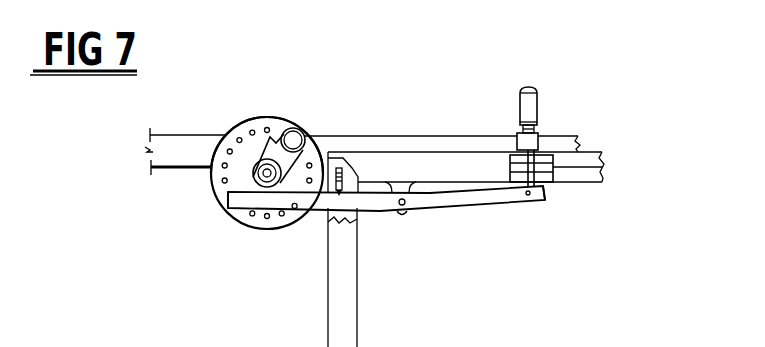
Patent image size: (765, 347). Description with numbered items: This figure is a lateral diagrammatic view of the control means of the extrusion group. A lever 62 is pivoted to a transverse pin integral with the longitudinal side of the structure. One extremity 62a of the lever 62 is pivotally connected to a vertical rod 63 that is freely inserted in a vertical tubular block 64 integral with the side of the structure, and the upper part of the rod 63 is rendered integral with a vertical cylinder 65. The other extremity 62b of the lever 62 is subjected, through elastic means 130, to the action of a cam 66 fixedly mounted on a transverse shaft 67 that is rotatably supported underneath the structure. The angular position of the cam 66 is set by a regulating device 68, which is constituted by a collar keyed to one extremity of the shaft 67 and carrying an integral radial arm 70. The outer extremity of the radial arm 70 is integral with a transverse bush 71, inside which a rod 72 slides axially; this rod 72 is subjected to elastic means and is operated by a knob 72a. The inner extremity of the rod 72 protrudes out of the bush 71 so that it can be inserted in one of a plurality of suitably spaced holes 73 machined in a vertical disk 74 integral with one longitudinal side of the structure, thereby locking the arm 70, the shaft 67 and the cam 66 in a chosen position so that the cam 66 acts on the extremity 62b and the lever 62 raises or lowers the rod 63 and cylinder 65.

The lever 62 is at (433, 218).
The extremity of the lever 62a is at (545, 194).
The other extremity of the lever 62b is at (223, 207).
The vertical rod 63 is at (553, 160).
The vertical tubular block 64 is at (530, 143).
The vertical cylinder 65 is at (527, 107).
The cam 66 is at (252, 148).
The transverse shaft 67 is at (263, 179).
The regulating device 68 is at (208, 182).
The radial arm 70 is at (289, 186).
The transverse bush 71 is at (294, 139).
The rod 72 is at (280, 115).
The knob 72a is at (304, 140).
The holes 73 is at (223, 164).
The vertical disk 74 is at (215, 195).
The elastic means 130 is at (342, 192).